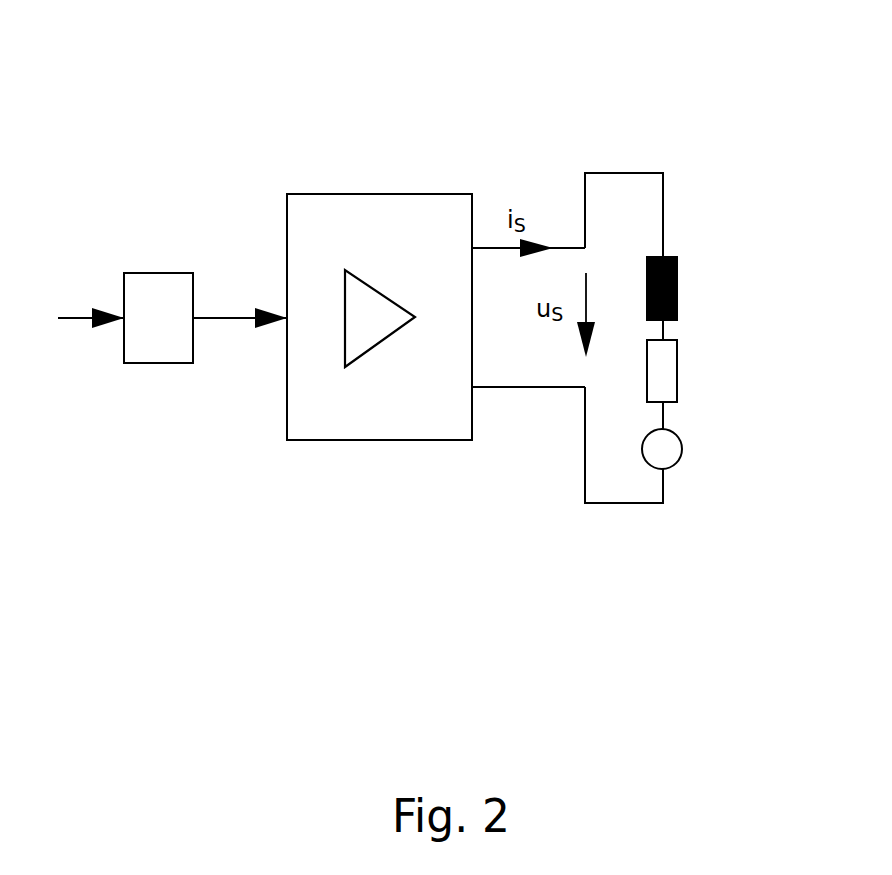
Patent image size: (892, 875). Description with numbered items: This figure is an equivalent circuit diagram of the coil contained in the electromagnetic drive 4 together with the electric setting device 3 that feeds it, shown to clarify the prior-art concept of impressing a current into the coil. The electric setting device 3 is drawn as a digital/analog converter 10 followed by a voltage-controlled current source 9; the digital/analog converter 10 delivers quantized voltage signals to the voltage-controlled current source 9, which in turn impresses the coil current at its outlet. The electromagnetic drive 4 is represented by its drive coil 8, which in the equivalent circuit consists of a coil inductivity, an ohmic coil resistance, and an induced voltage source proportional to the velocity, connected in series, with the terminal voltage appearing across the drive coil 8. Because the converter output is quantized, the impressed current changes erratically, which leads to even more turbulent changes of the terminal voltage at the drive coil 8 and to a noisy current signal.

The electric setting device 3 is at (286, 252).
The electromagnetic drive 4 is at (668, 123).
The drive coil 8 is at (729, 361).
The voltage-controlled current source 9 is at (443, 229).
The digital/analog converter 10 is at (157, 292).